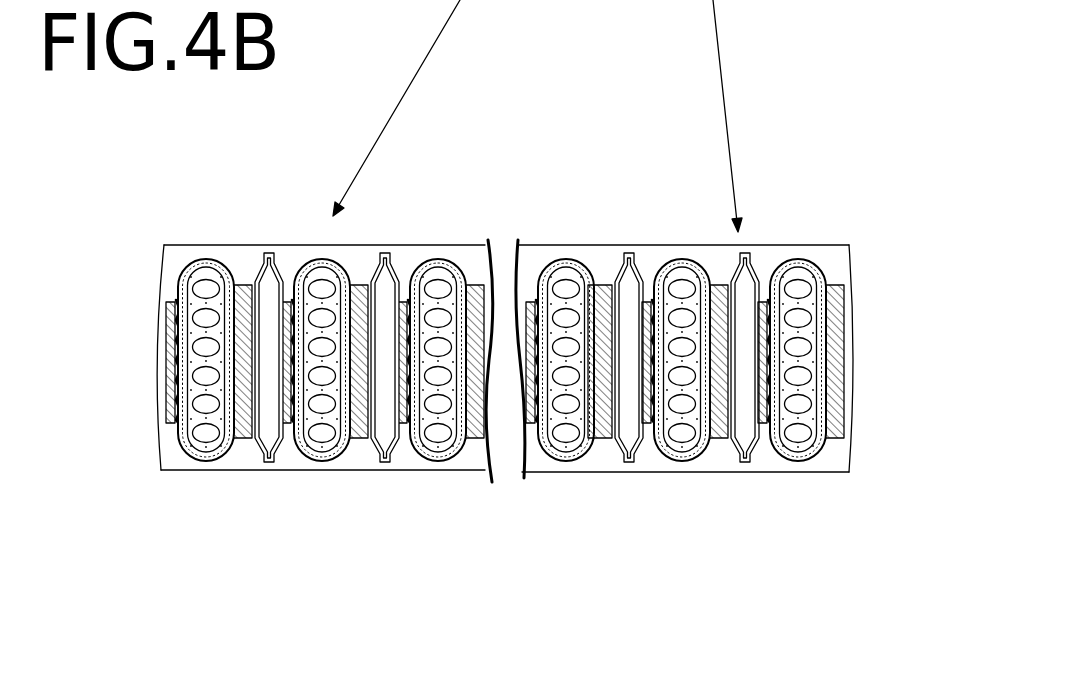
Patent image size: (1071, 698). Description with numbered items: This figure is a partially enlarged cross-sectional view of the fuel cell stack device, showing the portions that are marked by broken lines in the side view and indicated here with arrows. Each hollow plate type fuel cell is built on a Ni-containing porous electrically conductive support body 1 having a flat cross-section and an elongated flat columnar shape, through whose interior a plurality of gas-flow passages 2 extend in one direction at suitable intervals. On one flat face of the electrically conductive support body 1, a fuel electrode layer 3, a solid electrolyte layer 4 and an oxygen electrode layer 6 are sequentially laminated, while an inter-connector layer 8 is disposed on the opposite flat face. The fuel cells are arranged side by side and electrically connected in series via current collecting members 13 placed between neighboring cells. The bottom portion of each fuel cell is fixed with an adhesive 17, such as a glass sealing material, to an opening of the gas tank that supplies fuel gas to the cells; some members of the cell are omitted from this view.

The electrically conductive support body 1 is at (790, 434).
The gas-flow passages 2 is at (794, 434).
The fuel electrode layer 3 is at (817, 452).
The solid electrolyte layer 4 is at (797, 448).
The oxygen electrode layer 6 is at (762, 322).
The inter-connector layer 8 is at (833, 285).
The current collecting member 13 is at (745, 261).
The adhesive 17 is at (602, 267).